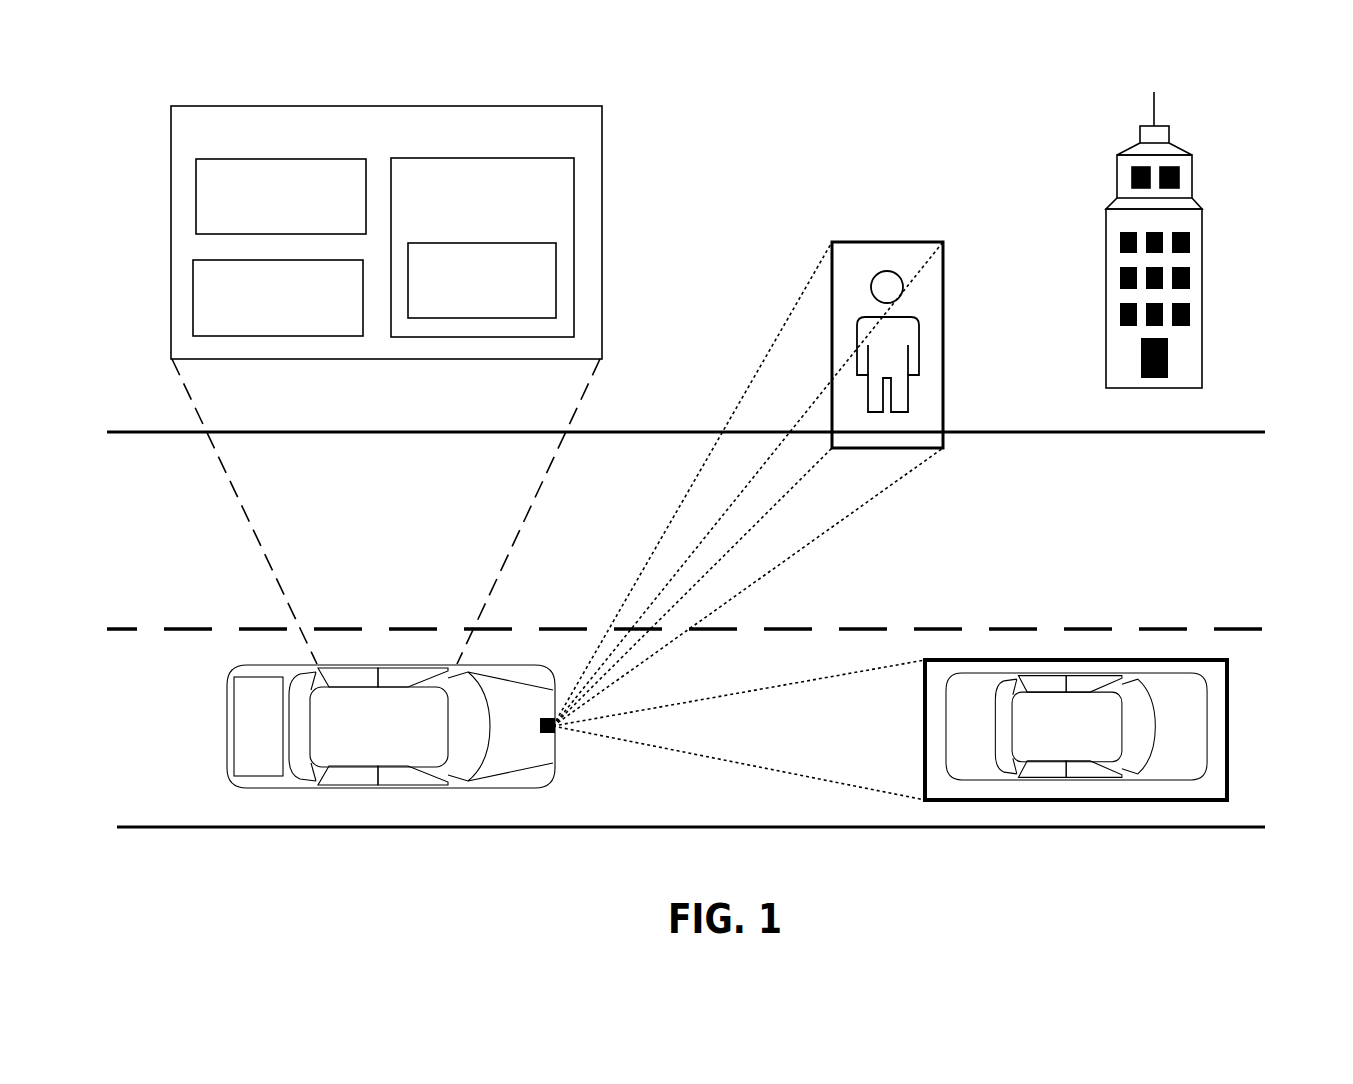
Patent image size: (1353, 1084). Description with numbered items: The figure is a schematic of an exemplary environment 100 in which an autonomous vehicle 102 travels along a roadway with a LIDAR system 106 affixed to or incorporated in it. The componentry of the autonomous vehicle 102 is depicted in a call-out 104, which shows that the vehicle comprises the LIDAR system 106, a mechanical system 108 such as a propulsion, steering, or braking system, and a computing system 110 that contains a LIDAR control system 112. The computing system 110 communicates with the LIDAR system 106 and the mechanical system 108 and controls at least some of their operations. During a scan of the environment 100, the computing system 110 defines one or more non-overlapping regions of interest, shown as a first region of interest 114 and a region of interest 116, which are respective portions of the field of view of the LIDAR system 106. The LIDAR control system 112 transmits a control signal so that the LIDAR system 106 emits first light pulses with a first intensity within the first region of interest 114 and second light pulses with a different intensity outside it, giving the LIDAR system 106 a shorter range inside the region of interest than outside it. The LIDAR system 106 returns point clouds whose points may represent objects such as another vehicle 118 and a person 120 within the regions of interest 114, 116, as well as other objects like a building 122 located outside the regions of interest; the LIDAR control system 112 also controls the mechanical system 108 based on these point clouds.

The environment 100 is at (968, 104).
The autonomous vehicle 102 is at (227, 702).
The call-out 104 is at (575, 139).
The LIDAR system 106 is at (357, 229).
The mechanical system 108 is at (357, 331).
The computing system 110 is at (575, 205).
The LIDAR control system 112 is at (556, 267).
The first region of interest 114 is at (968, 660).
The region of interest 116 is at (943, 260).
The vehicle 118 is at (1207, 717).
The person 120 is at (919, 326).
The building 122 is at (1202, 243).